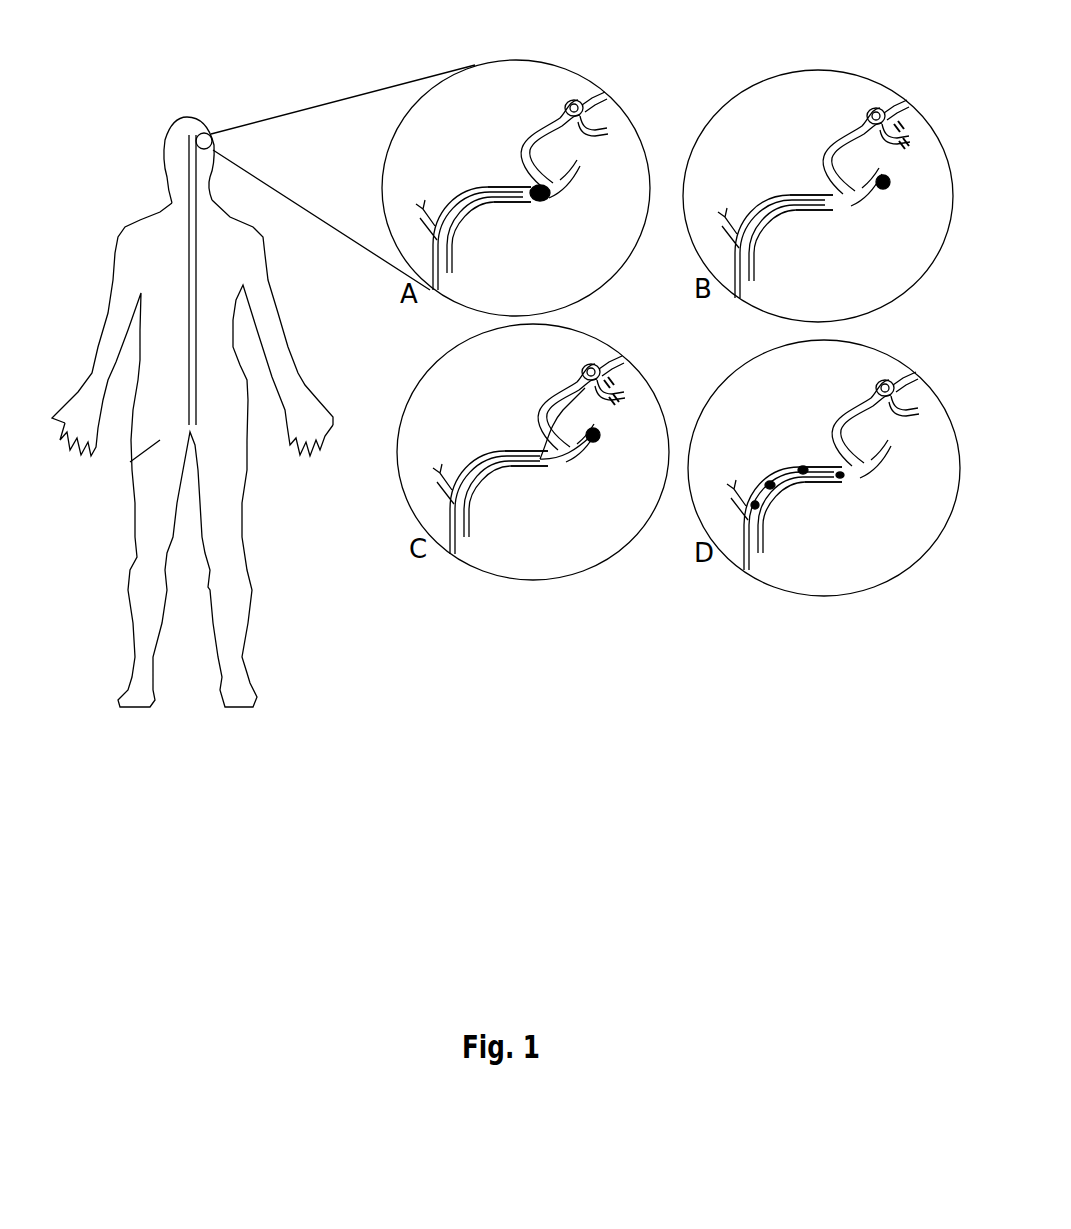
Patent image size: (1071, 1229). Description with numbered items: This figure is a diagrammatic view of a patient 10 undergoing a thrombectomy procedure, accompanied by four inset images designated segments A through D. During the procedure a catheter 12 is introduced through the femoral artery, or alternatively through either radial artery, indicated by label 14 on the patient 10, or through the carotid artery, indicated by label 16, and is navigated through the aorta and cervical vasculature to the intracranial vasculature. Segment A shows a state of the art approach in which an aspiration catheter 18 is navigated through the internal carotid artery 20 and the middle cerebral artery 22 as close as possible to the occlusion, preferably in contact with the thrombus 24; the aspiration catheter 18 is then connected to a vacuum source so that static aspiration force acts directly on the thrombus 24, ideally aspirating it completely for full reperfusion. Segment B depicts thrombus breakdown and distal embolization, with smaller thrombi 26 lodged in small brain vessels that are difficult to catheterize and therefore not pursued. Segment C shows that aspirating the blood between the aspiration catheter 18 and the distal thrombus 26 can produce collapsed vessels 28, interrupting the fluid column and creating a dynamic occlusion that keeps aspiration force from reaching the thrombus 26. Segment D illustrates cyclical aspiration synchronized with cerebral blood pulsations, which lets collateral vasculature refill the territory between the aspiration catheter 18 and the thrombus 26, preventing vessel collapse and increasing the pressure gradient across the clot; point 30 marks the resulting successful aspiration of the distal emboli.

The patient 10 is at (192, 412).
The catheter 12 is at (203, 423).
The radial artery 14 is at (197, 416).
The carotid artery 16 is at (219, 170).
The aspiration catheter 18 is at (636, 384).
The internal carotid artery 20 is at (624, 378).
The middle cerebral artery 22 is at (649, 327).
The thrombus 24 is at (547, 203).
The thrombi 26 is at (600, 437).
The collapsed vessels 28 is at (565, 431).
The point of successful aspiration 30 is at (797, 487).